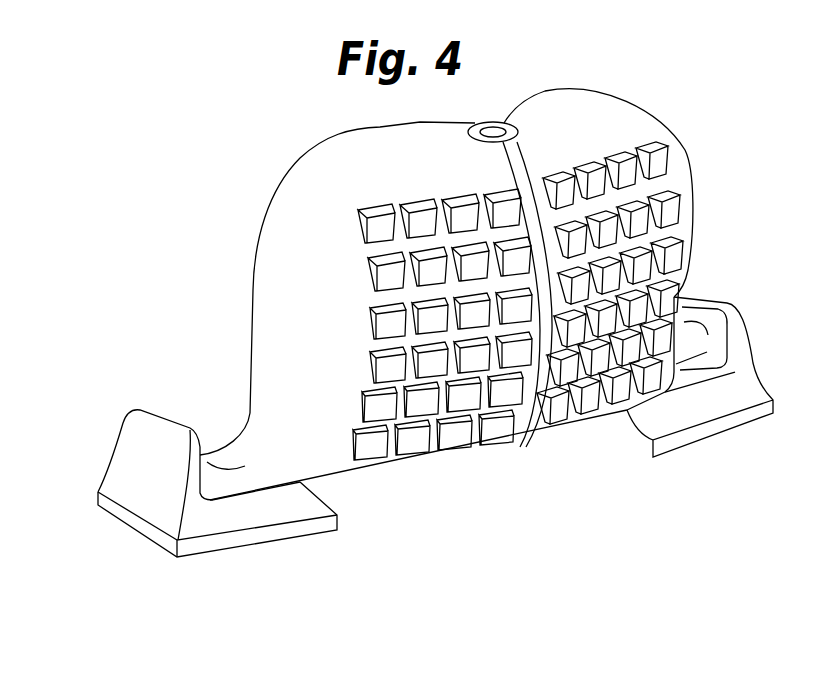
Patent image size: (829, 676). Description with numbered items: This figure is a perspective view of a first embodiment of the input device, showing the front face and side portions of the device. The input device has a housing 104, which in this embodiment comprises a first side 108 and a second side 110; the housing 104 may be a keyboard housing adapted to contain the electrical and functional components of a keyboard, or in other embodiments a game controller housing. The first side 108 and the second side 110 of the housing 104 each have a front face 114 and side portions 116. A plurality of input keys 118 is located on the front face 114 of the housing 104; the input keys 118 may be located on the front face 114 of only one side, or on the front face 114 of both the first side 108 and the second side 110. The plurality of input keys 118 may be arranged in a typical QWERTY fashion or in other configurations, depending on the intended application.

The housing 104 is at (190, 222).
The first side 108 is at (417, 522).
The second side 110 is at (597, 468).
The front face 114 is at (346, 395).
The side portions 116 is at (262, 343).
The plurality of input keys 118 is at (467, 397).